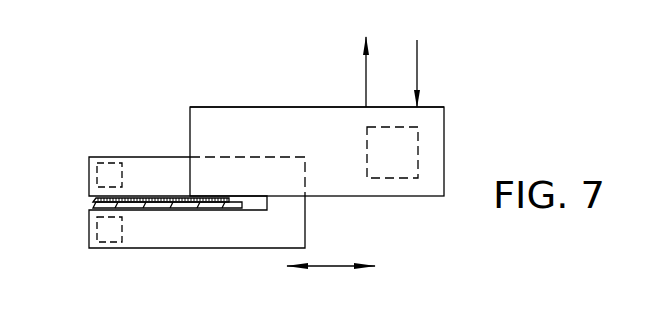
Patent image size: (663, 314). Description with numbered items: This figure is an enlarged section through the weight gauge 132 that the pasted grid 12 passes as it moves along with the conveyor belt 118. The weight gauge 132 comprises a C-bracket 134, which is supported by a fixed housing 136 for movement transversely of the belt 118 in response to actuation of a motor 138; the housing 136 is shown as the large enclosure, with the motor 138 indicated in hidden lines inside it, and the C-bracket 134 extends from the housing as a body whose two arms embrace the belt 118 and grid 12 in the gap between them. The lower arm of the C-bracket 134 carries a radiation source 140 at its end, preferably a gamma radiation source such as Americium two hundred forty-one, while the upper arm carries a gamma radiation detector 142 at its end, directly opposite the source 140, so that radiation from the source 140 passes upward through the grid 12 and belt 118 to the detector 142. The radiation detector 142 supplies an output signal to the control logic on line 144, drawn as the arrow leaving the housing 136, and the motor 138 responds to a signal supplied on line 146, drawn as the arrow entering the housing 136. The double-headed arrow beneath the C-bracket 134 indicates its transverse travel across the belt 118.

The grid 12 is at (168, 177).
The conveyor belt 118 is at (215, 208).
The weight gauge 132 is at (242, 95).
The C-bracket 134 is at (198, 248).
The fixed housing 136 is at (321, 107).
The motor 138 is at (367, 143).
The radiation source 140 is at (97, 229).
The gamma radiation detector 142 is at (119, 139).
The line 144 is at (367, 87).
The line 146 is at (420, 81).